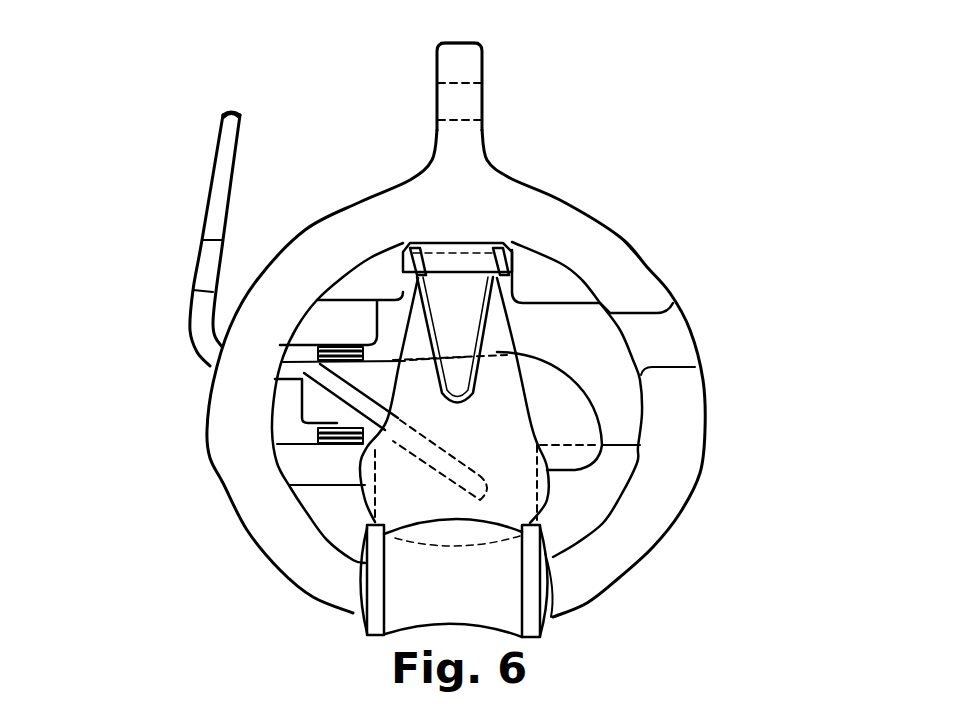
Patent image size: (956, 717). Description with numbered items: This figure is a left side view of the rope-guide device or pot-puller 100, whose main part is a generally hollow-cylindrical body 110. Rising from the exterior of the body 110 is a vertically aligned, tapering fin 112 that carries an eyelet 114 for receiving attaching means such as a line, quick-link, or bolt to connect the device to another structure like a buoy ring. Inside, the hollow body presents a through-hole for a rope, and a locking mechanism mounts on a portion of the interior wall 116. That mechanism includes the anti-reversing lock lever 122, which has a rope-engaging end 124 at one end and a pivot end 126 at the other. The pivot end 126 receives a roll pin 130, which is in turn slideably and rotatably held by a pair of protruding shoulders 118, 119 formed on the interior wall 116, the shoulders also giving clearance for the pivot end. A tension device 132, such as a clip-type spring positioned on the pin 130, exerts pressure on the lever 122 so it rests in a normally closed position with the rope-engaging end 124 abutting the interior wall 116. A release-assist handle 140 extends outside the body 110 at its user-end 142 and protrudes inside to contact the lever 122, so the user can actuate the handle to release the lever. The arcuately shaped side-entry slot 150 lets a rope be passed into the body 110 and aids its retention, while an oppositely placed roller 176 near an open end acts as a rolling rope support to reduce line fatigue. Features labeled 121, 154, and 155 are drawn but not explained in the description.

The pot-puller 100 is at (643, 213).
The hollow-cylindrical body 110 is at (510, 183).
The fin 112 is at (482, 44).
The eyelet 114 is at (437, 87).
The interior wall 116 is at (637, 373).
The protruding shoulder 118 is at (537, 283).
The protruding shoulder 119 is at (343, 292).
The lower segment 121 is at (332, 510).
The anti-reversing lock lever 122 is at (550, 490).
The rope-engaging end 124 is at (457, 518).
The pivot end 126 is at (457, 240).
The roll pin 130 is at (483, 245).
The tension device 132 is at (405, 263).
The release-assist handle 140 is at (193, 295).
The user-end 142 is at (220, 110).
The arcuately shaped slot 150 is at (702, 323).
The lever arm 154 is at (330, 330).
The bracket 155 is at (297, 457).
The roller 176 is at (542, 580).